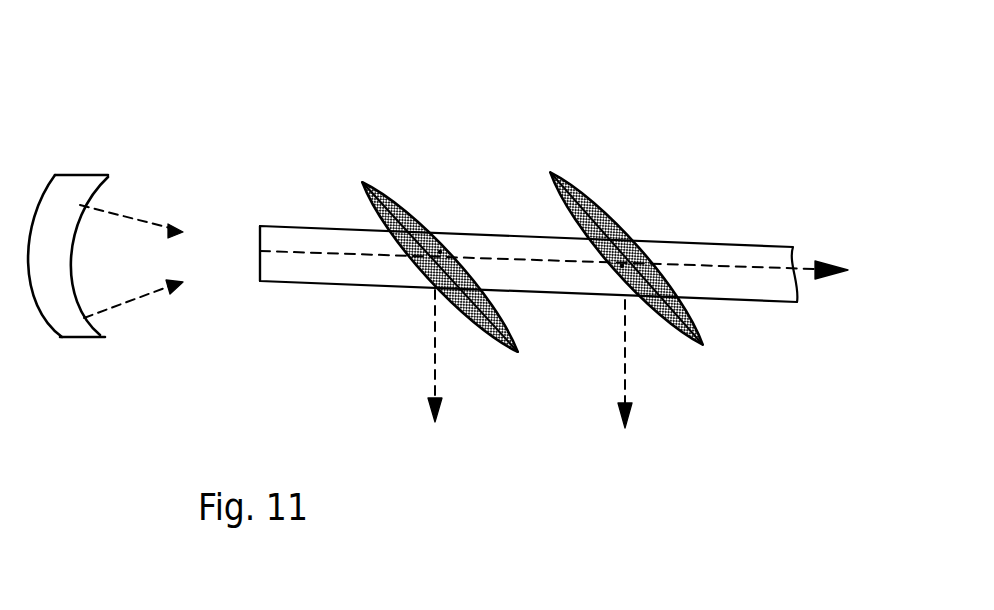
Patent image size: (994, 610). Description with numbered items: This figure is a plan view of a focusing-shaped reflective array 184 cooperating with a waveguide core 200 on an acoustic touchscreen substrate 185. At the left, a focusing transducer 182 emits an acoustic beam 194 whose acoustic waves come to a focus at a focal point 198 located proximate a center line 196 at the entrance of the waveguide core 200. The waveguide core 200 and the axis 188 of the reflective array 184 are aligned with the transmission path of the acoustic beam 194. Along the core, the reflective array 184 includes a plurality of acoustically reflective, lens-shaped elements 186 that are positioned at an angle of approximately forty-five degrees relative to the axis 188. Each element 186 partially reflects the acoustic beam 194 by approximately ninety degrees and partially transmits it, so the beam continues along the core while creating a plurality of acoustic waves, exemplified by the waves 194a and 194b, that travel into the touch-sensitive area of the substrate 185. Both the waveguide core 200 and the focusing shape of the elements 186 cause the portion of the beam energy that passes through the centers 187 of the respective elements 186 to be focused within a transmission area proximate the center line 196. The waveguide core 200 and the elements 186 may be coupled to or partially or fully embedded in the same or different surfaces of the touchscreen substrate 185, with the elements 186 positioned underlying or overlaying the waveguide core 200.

The focusing transducer 182 is at (55, 197).
The focusing-shaped reflective array 184 is at (633, 173).
The acoustic touchscreen substrate 185 is at (845, 418).
The lens-shaped element 186 is at (410, 208).
The center 187 is at (440, 250).
The axis 188 is at (861, 272).
The acoustic beam 194 is at (160, 297).
The acoustic wave 194a is at (437, 364).
The acoustic wave 194b is at (627, 372).
The center line 196 is at (716, 265).
The focal point 198 is at (260, 252).
The waveguide core 200 is at (325, 282).